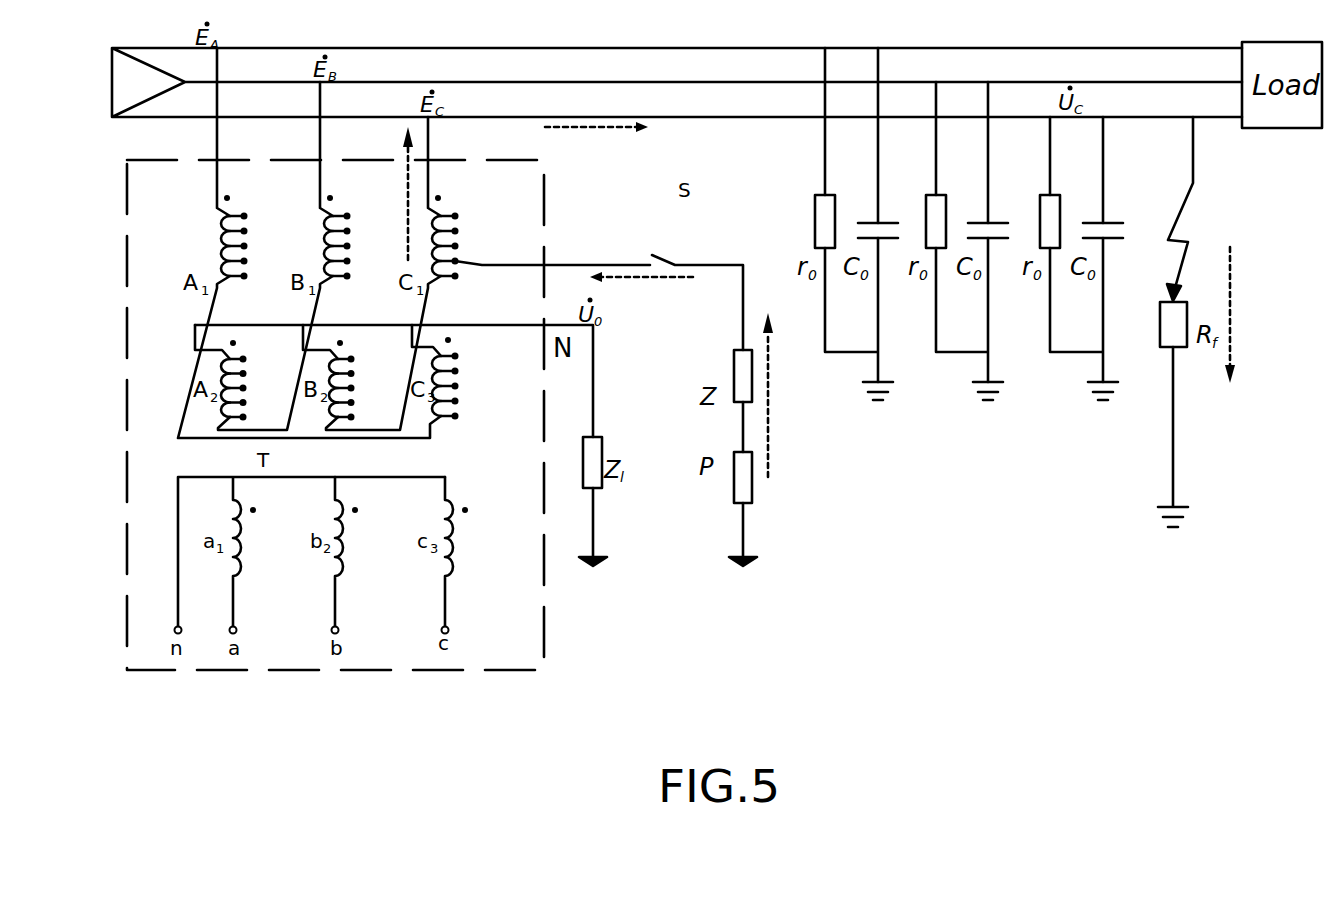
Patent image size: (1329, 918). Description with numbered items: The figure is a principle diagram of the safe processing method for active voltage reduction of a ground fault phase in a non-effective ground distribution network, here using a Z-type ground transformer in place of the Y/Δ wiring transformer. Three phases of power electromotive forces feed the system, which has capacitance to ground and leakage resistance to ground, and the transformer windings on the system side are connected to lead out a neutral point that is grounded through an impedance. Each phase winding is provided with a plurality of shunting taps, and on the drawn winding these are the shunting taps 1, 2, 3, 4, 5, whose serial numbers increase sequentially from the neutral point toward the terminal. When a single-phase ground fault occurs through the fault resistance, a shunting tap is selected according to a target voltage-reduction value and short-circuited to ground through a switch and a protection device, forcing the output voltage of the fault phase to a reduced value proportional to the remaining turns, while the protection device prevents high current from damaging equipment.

The shunting tap 1 is at (457, 276).
The shunting tap 2 is at (545, 261).
The shunting tap 3 is at (457, 246).
The shunting tap 4 is at (457, 231).
The shunting tap 5 is at (457, 216).